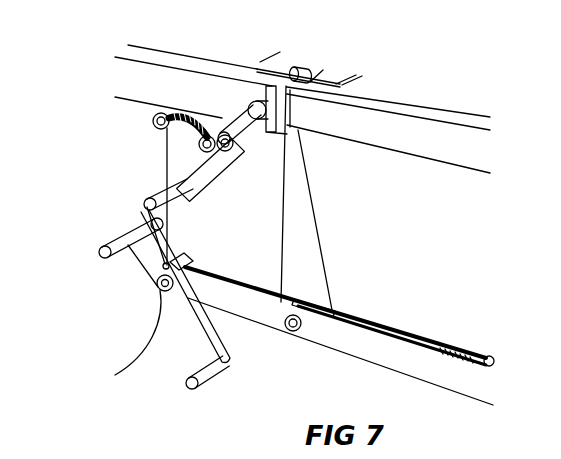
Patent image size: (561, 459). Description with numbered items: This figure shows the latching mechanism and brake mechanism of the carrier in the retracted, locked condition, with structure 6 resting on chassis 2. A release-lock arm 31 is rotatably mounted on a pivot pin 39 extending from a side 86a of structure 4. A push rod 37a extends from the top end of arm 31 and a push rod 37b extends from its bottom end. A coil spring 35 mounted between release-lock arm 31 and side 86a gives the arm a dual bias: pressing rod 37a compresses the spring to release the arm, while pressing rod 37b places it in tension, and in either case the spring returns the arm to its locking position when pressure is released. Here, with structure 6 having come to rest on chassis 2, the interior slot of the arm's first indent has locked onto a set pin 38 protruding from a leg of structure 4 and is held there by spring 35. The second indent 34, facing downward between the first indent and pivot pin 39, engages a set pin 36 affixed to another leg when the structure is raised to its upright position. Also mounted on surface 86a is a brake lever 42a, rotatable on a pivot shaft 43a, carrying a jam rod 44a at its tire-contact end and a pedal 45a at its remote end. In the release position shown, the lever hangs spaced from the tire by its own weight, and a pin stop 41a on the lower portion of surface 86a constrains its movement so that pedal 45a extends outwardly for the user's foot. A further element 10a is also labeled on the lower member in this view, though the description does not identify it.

The chassis 2 is at (420, 382).
The structure 4 is at (137, 132).
The structure 6 is at (385, 218).
The pivot pin 10a is at (295, 332).
The release-lock arm 31 is at (210, 183).
The second indent 34 is at (243, 137).
The coil spring 35 is at (197, 110).
The set pin 36 is at (490, 355).
The push rod 37a is at (257, 100).
The push rod 37b is at (147, 197).
The set pin 38 is at (240, 103).
The pivot pin 39 is at (232, 163).
The pin stop 41a is at (190, 255).
The brake lever 42a is at (187, 315).
The pivot shaft 43a is at (158, 287).
The jam rod 44a is at (127, 240).
The pedal 45a is at (202, 373).
The side 86a is at (262, 252).